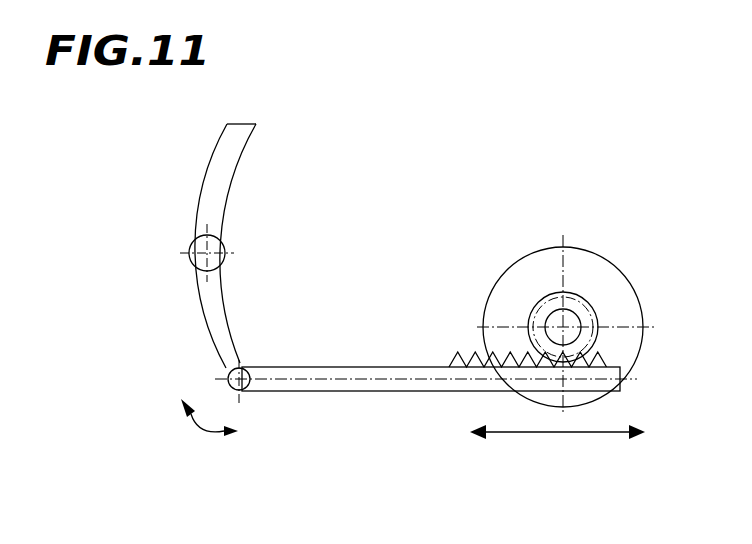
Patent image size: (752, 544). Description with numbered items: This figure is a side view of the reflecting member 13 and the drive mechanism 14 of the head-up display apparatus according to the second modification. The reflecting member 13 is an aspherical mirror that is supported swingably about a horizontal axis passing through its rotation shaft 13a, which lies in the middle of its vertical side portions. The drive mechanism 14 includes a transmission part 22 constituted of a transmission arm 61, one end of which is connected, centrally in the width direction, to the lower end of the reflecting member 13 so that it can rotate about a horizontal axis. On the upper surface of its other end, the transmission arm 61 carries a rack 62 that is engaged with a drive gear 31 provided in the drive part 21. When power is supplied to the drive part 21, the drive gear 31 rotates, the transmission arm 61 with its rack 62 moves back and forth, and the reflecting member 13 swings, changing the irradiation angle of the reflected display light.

The reflecting member 13 is at (241, 148).
The rotation shaft 13a is at (195, 247).
The drive mechanism 14 is at (426, 385).
The drive part 21 is at (604, 273).
The transmission part 22 is at (426, 339).
The drive gear 31 is at (592, 304).
The transmission arm 61 is at (343, 367).
The rack 62 is at (449, 366).